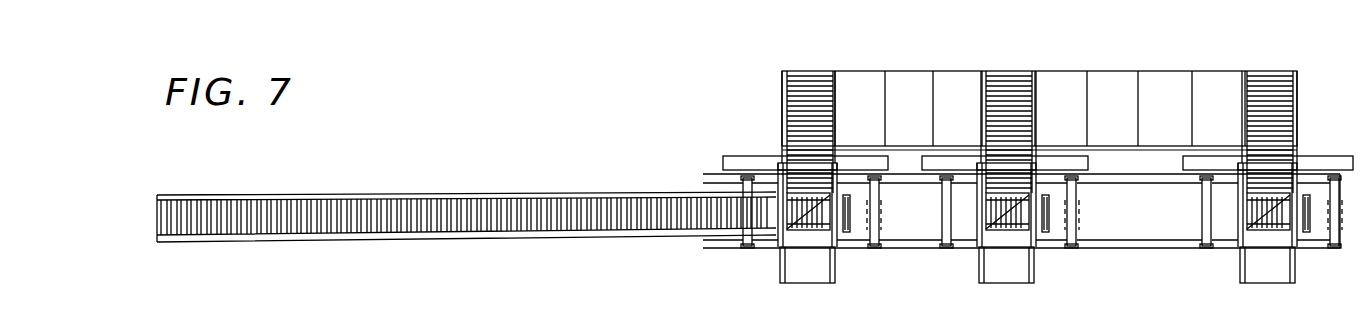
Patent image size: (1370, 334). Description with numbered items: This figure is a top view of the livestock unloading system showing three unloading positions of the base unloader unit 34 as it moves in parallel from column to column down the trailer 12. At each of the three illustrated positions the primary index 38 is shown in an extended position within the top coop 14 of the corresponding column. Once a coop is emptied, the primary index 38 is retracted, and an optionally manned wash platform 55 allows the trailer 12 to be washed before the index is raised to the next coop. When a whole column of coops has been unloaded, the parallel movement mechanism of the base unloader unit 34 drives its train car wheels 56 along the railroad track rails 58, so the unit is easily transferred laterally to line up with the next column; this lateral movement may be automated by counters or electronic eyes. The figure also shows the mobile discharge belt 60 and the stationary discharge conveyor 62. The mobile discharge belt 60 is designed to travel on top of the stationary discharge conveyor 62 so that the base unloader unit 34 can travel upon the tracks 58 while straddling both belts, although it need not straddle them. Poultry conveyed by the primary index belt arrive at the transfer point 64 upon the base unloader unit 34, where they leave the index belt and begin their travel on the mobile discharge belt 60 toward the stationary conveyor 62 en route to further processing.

The trailer 12 is at (880, 59).
The top coop 14 is at (808, 73).
The primary index 38 is at (782, 95).
The wash platform 55 is at (735, 163).
The train car wheels 56 is at (878, 180).
The railroad track rails 58 is at (884, 250).
The mobile discharge belt 60 is at (428, 230).
The stationary discharge conveyor 62 is at (162, 220).
The transfer point 64 is at (790, 230).
The base unloader unit 34 is at (848, 262).